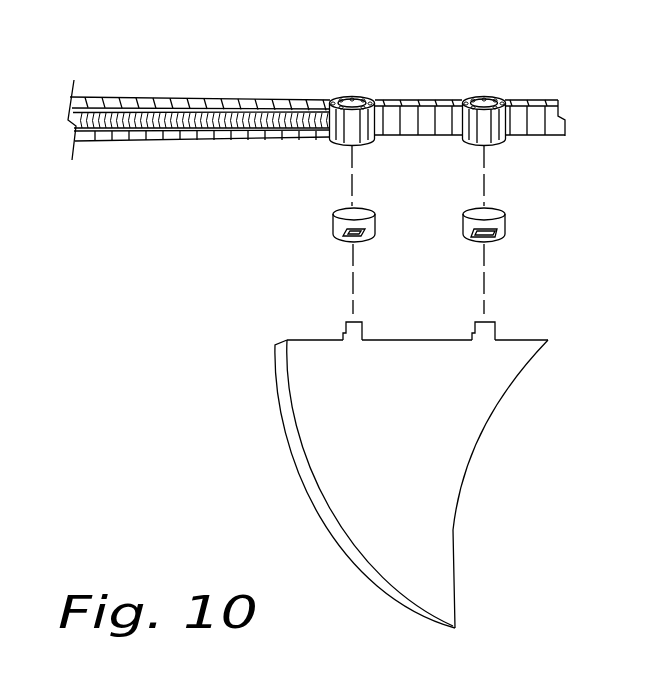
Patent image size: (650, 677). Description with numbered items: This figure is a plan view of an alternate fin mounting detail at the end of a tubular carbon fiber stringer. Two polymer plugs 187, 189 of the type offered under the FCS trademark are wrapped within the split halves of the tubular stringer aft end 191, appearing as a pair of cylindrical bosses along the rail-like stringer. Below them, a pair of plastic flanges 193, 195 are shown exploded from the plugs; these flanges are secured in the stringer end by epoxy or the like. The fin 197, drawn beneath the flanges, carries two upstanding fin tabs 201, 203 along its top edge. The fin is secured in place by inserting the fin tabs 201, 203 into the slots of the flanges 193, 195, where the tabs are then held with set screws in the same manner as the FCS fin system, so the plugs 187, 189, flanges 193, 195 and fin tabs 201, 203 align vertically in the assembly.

The tubular stringer aft end 191 is at (413, 82).
The polymer plug 187 is at (352, 99).
The polymer plug 189 is at (485, 99).
The plastic flange 193 is at (333, 221).
The plastic flange 195 is at (504, 221).
The fin 197 is at (460, 460).
The fin tab 201 is at (345, 331).
The fin tab 203 is at (493, 331).